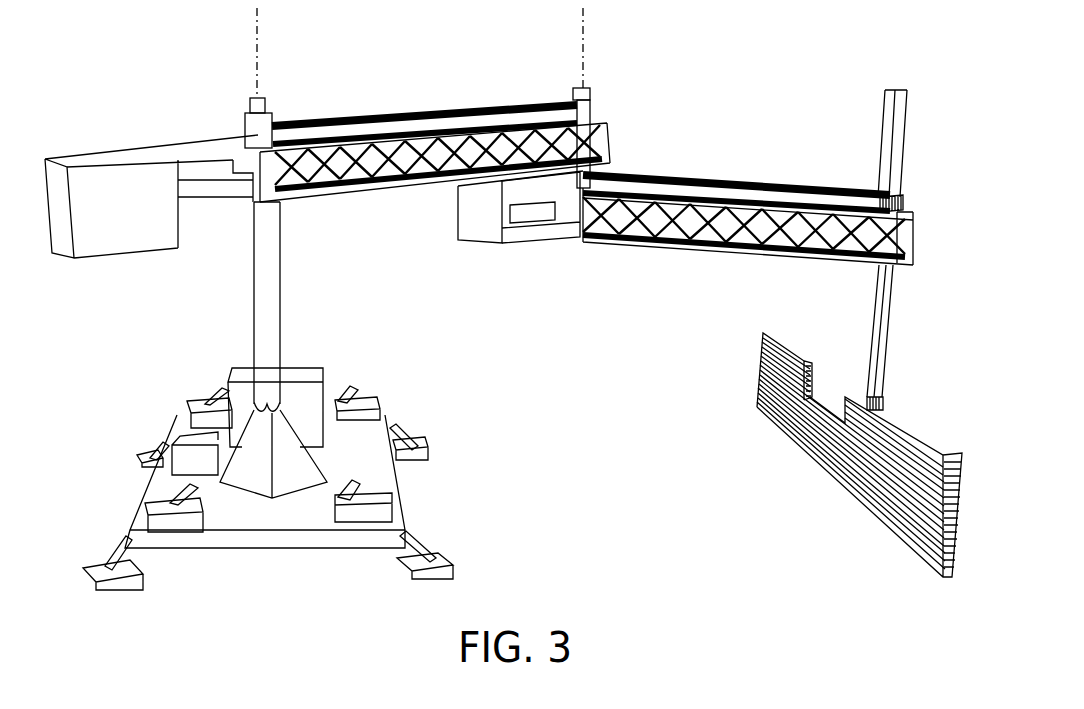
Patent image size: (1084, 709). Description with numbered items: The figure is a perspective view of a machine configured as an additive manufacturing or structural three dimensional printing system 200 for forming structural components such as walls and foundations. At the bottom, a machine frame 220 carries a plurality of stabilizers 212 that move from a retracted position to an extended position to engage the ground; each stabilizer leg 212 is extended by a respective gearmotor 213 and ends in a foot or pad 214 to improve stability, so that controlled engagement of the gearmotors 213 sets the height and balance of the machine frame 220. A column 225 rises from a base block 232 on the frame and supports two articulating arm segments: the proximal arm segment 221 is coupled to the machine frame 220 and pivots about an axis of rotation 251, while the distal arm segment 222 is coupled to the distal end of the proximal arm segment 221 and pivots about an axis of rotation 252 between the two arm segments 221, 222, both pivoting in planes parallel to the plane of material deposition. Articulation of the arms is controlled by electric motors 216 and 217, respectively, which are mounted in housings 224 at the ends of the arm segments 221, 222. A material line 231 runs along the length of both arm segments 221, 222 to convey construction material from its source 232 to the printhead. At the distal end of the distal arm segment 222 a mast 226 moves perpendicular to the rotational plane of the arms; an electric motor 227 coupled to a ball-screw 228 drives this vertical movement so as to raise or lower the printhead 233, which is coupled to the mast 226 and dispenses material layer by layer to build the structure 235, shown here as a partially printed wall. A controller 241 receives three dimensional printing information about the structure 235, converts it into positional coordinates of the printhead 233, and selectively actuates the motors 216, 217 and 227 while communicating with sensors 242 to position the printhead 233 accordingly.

The printing system 200 is at (136, 348).
The stabilizer 212 is at (220, 390).
The gearmotor 213 is at (185, 402).
The foot 214 is at (143, 453).
The electric motor 216 is at (215, 194).
The electric motor 217 is at (540, 223).
The machine frame 220 is at (310, 548).
The proximal arm segment 221 is at (391, 189).
The distal arm segment 222 is at (688, 247).
The counterweight housing 224 is at (152, 254).
The column 225 is at (279, 282).
The mast 226 is at (888, 337).
The electric motor 227 is at (902, 206).
The ball-screw 228 is at (883, 128).
The material line 231 is at (412, 120).
The source of construction material 232 is at (317, 365).
The printhead 233 is at (886, 404).
The structure 235 is at (727, 393).
The controller 241 is at (168, 468).
The sensor 242 is at (250, 108).
The axis of rotation 251 is at (254, 61).
The axis of rotation 252 is at (582, 40).